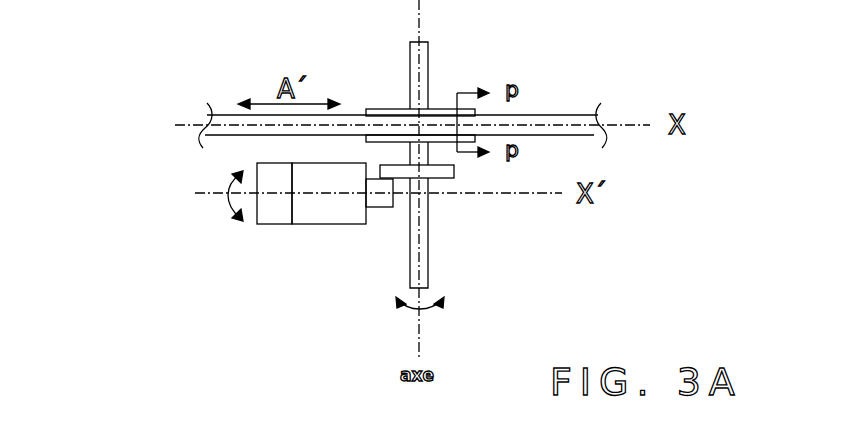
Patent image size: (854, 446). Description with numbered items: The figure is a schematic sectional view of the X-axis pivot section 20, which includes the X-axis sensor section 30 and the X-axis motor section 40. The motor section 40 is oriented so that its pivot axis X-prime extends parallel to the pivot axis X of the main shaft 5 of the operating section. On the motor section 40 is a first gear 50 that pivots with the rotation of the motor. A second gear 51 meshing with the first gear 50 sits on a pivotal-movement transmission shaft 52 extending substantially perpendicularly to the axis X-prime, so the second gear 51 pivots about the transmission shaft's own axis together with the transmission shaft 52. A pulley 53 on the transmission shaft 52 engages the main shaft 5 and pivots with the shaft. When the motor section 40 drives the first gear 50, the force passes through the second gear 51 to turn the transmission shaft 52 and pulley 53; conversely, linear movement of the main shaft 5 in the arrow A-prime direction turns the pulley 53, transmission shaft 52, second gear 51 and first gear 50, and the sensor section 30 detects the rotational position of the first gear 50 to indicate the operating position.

The main shaft 5 is at (553, 115).
The X-axis pivot section 20 is at (280, 168).
The X-axis sensor section 30 is at (272, 224).
The X-axis motor 40 is at (318, 224).
The first gear 50 is at (383, 207).
The second gear 51 is at (450, 178).
The pivotal-movement transmission shaft 52 is at (429, 264).
The pulley 53 is at (380, 109).